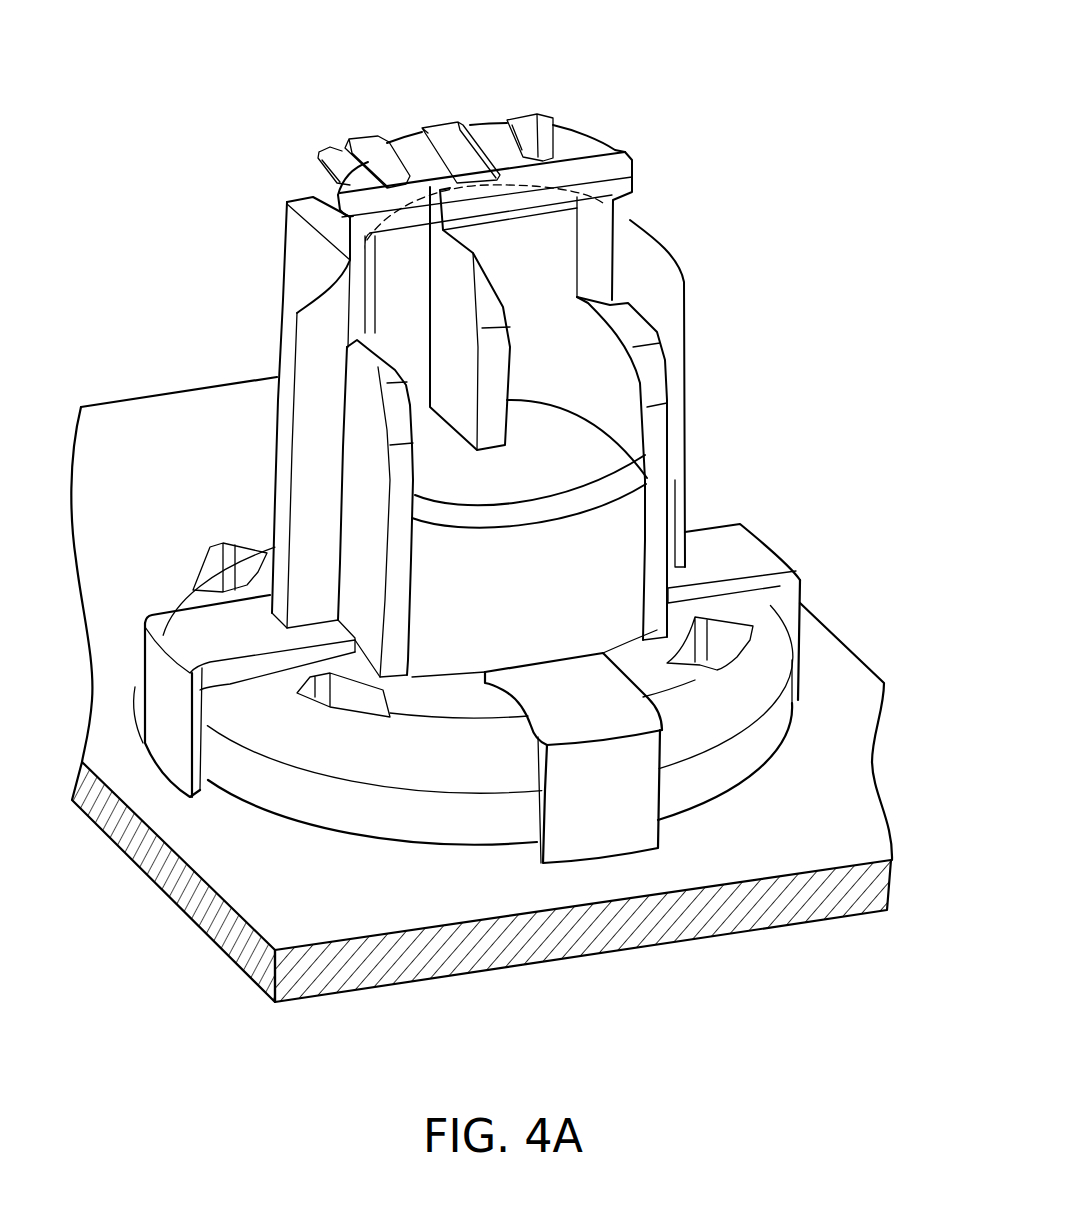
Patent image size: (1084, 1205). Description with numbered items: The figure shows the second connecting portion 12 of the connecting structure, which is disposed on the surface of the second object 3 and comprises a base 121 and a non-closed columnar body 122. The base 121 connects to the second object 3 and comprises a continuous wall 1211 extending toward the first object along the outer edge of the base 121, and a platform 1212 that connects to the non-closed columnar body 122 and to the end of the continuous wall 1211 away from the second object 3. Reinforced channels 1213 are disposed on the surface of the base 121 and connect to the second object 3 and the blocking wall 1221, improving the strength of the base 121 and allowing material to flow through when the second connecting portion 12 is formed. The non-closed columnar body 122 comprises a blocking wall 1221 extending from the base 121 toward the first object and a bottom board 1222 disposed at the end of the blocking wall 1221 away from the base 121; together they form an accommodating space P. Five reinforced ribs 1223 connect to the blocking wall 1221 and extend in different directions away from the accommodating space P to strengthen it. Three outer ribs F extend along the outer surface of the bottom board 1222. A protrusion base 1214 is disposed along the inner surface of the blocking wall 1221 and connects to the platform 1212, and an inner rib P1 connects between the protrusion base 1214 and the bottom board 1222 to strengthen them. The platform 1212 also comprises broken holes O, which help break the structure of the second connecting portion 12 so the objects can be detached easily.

The second connecting portion 12 is at (281, 59).
The base 121 is at (817, 463).
The continuous wall 1211 is at (773, 730).
The platform 1212 is at (770, 645).
The reinforced channel 1213 is at (737, 552).
The protrusion base 1214 is at (603, 540).
The non-closed columnar body 122 is at (683, 70).
The blocking wall 1221 is at (560, 230).
The bottom board 1222 is at (580, 148).
The reinforced rib 1223 is at (307, 247).
The outer rib F is at (368, 148).
The accommodating space P is at (512, 275).
The inner rib P1 is at (488, 375).
The broken hole O is at (217, 575).
The second object 3 is at (712, 917).